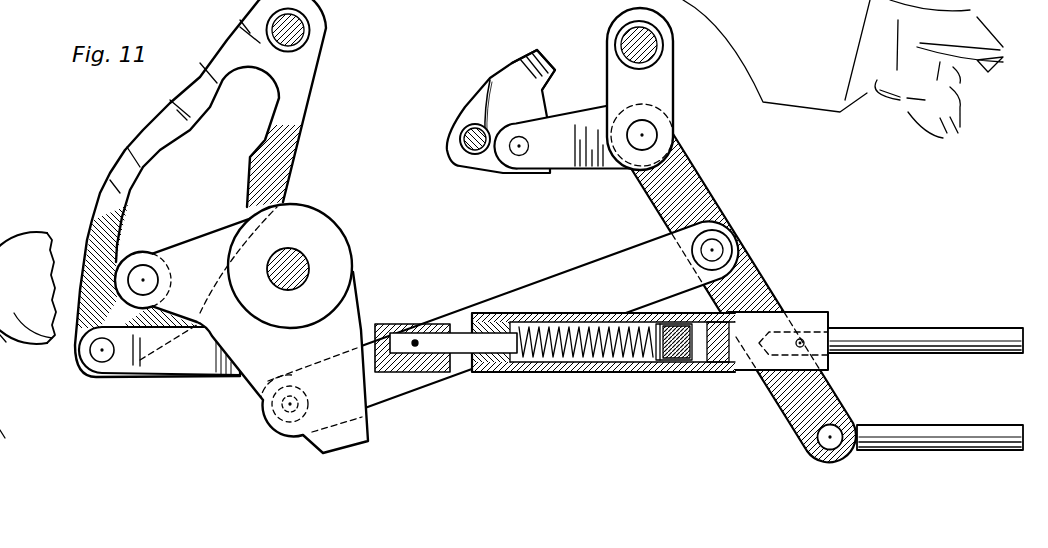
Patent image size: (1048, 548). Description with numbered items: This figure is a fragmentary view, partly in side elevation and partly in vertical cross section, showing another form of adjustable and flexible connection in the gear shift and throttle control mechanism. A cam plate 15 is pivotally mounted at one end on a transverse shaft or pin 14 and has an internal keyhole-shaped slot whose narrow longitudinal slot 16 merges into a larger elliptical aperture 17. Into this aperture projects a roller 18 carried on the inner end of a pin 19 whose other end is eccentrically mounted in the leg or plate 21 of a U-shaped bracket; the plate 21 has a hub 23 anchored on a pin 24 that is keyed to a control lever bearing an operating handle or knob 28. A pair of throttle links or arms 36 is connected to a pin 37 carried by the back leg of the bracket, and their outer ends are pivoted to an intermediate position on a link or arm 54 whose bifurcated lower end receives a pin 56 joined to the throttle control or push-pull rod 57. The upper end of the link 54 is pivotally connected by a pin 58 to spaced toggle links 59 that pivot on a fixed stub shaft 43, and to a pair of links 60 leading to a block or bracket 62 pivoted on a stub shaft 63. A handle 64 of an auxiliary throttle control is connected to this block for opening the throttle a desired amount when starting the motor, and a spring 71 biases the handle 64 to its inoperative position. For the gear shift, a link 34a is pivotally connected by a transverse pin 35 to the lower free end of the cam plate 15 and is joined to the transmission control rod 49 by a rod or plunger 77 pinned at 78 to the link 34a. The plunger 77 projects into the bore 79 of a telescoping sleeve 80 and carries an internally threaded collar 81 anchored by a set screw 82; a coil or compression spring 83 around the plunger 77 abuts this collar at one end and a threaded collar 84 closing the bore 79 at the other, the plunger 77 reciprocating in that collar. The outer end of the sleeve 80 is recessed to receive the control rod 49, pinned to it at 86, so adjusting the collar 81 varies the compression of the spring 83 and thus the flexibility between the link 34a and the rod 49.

The transverse shaft or pin 14 is at (309, 32).
The cam plate 15 is at (220, 188).
The slot 16 is at (211, 106).
The slot or aperture 17 is at (146, 186).
The roller 18 is at (135, 252).
The pin 19 is at (145, 278).
The leg or plate 21 is at (276, 328).
The hub 23 is at (313, 240).
The pin 24 is at (293, 268).
The operating handle or knob 28 is at (50, 234).
The link 34a is at (188, 378).
The transverse pin 35 is at (102, 364).
The links or arms 36 is at (566, 272).
The pin 37 is at (290, 418).
The fixed stub shaft 43 is at (660, 47).
The control or push-pull rod 49 is at (923, 327).
The link or arm 54 is at (785, 283).
The pin 56 is at (834, 430).
The control or push-pull rod 57 is at (955, 424).
The pin 58 is at (645, 135).
The toggle links 59 is at (675, 97).
The links 60 is at (572, 118).
The block or bracket 62 is at (497, 94).
The stub shaft 63 is at (477, 153).
The handle 64 is at (532, 52).
The spring 71 is at (493, 102).
The rod or plunger 77 is at (463, 356).
The pin 78 is at (414, 372).
The bore 79 is at (704, 357).
The telescoping or encompassing sleeve 80 is at (609, 345).
The internally threaded collar 81 is at (663, 364).
The set screw 82 is at (678, 362).
The coil or compression spring 83 is at (565, 365).
The threaded collar 84 is at (495, 313).
The pin 86 is at (804, 340).